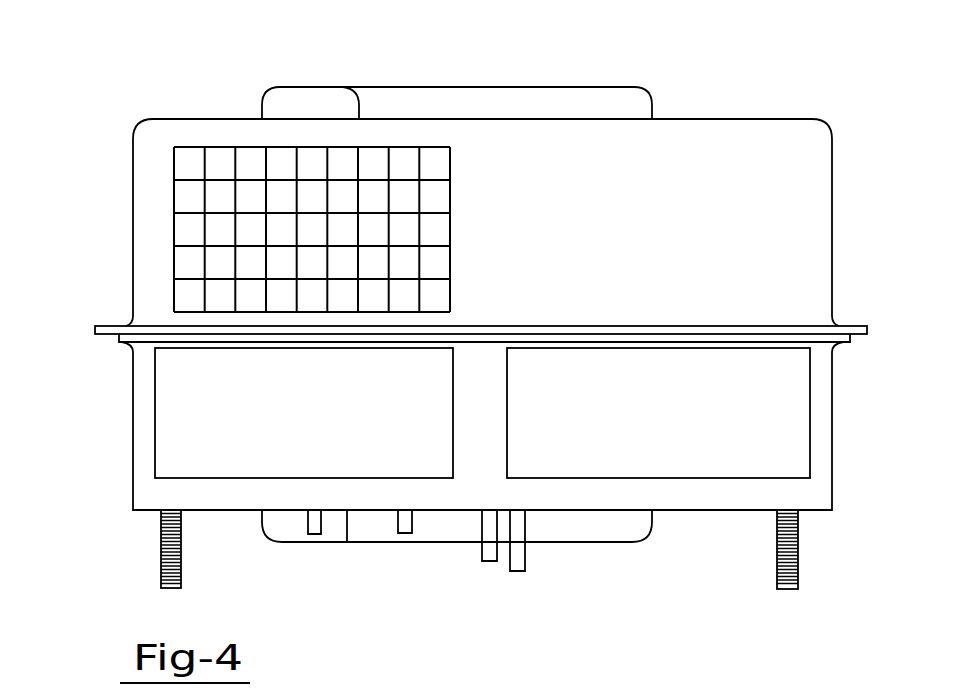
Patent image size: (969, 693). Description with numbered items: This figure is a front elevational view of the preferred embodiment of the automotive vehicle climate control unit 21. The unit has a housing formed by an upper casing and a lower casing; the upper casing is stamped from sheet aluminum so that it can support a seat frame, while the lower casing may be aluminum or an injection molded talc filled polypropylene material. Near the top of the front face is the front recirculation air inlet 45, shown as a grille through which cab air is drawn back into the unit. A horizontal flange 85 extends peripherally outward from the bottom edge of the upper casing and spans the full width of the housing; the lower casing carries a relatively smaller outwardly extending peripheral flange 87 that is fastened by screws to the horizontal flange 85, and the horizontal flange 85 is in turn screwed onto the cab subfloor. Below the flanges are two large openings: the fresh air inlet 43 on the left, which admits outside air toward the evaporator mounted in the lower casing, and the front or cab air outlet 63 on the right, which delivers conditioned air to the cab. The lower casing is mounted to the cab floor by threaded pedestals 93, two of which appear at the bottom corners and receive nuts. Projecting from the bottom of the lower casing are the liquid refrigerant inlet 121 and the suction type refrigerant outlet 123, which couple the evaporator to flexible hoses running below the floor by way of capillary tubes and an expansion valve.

The climate control unit 21 is at (70, 163).
The front recirculation air inlet 45 is at (219, 194).
The horizontal flange 85 is at (653, 330).
The peripheral flange 87 is at (683, 343).
The fresh air inlet 43 is at (210, 407).
The front or cab air outlet 63 is at (757, 413).
The threaded pedestals 93 is at (167, 557).
The suction type refrigerant outlet 123 is at (312, 521).
The liquid refrigerant inlet 121 is at (410, 528).